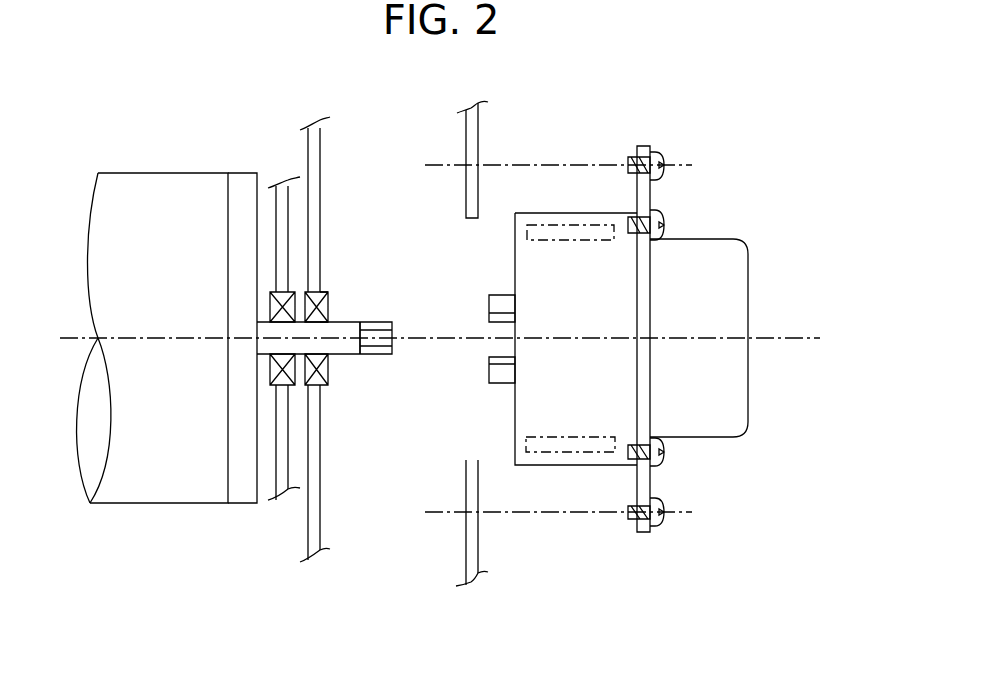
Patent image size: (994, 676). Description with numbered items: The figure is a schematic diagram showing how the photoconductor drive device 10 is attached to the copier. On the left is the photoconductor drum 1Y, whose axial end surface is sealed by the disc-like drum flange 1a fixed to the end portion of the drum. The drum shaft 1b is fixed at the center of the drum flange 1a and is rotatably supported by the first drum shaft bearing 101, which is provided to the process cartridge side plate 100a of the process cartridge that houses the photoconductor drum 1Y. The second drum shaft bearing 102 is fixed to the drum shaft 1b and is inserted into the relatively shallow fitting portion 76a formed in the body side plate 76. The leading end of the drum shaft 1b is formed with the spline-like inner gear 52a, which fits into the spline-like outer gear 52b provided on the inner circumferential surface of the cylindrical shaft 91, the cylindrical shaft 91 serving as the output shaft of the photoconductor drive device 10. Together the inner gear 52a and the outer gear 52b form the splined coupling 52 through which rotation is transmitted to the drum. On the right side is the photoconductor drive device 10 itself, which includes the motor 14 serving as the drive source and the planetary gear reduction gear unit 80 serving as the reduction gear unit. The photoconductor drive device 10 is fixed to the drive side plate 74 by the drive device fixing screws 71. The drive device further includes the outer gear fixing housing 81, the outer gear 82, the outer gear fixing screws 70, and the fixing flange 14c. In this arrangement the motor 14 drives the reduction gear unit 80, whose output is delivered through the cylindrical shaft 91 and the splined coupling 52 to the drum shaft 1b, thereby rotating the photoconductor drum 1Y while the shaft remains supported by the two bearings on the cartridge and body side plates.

The photoconductor drum 1Y is at (162, 175).
The drum flange 1a is at (243, 177).
The drum shaft 1b is at (347, 352).
The first drum shaft bearing 101 is at (290, 290).
The second drum shaft bearing 102 is at (328, 377).
The process cartridge side plate 100a is at (283, 443).
The body side plate 76 is at (317, 489).
The fitting portion 76a is at (328, 300).
The splined coupling 52 is at (402, 262).
The inner gear 52a is at (375, 322).
The outer gear 52b is at (490, 322).
The cylindrical shaft 91 is at (500, 380).
The planetary gear reduction gear unit 80 is at (546, 206).
The outer gear 82 is at (597, 223).
The outer gear fixing housing 81 is at (565, 465).
The drive side plate 74 is at (478, 545).
The photoconductor drive device 10 is at (620, 104).
The motor 14 is at (750, 412).
The fixing flange 14c is at (645, 476).
The drive device fixing screws 71 is at (664, 160).
The outer gear fixing screws 70 is at (664, 218).